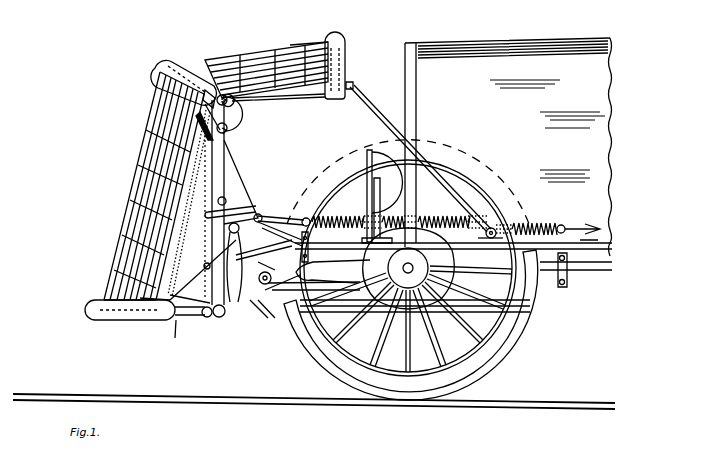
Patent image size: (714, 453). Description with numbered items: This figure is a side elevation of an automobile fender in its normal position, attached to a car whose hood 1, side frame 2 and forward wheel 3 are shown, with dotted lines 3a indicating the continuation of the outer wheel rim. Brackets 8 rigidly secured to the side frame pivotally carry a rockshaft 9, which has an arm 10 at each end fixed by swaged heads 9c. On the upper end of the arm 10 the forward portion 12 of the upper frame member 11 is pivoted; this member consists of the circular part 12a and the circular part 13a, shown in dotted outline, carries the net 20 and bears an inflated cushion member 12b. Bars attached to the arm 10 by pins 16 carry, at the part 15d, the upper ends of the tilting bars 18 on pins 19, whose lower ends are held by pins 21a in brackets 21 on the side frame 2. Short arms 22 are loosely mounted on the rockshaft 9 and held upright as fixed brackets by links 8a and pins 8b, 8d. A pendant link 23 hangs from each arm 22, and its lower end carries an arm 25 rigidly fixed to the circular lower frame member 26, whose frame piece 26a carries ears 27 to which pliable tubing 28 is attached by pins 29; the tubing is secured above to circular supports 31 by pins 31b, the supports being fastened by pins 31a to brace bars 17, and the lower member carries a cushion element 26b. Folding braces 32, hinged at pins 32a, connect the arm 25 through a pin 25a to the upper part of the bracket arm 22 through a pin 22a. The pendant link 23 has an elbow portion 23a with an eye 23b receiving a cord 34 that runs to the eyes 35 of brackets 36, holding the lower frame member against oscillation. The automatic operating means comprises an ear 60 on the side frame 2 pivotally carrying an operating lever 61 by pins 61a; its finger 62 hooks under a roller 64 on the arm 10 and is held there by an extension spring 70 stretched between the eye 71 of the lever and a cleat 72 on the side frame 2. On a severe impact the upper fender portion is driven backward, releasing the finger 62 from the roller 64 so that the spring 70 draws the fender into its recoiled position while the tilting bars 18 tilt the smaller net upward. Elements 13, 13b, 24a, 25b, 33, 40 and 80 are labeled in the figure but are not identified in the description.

The hood 1 is at (508, 147).
The side frame 2 is at (576, 270).
The forward wheel 3 is at (300, 335).
The dotted lines of wheel rim 3a is at (322, 167).
The bracket 8 is at (280, 288).
The link 8a is at (271, 279).
The pin 8b is at (285, 276).
The pin 8d is at (254, 310).
The rockshaft 9 is at (219, 318).
The head 9c is at (226, 316).
The arm 10 is at (226, 150).
The upper frame member 11 is at (266, 62).
The forward portion of upper frame member 12 is at (184, 68).
The circular part 12a is at (160, 72).
The cushion member 12b is at (160, 58).
The cylinder 13 is at (347, 65).
The circular part 13a is at (346, 68).
The cylinder cap 13b is at (335, 32).
The part of bar 15d is at (350, 90).
The pin 16 is at (232, 108).
The brace bar 17 is at (308, 95).
The tilting bar 18 is at (420, 158).
The pin 19 is at (354, 85).
The net 20 is at (296, 48).
The bracket 21 is at (482, 237).
The pin 21a is at (490, 224).
The short arm 22 is at (240, 285).
The pin 22a is at (230, 230).
The pendant link 23 is at (185, 329).
The elbow portion 23a is at (264, 252).
The eye 23b is at (236, 230).
The link rod 24a is at (276, 243).
The arm 25 is at (184, 320).
The pin 25a is at (160, 318).
The rod ring 25b is at (208, 318).
The lower frame member 26 is at (111, 310).
The lower frame piece 26a is at (108, 315).
The cushion element 26b is at (86, 313).
The ear 27 is at (148, 306).
The pliable tubing 28 is at (203, 226).
The pin 29 is at (174, 296).
The circular metal support 31 is at (252, 117).
The pin 31a is at (252, 101).
The pin 31b is at (240, 136).
The folding brace 32 is at (212, 262).
The hinge pin 32a is at (203, 270).
The pawl 33 is at (198, 126).
The cord 34 is at (236, 175).
The eye 35 is at (214, 93).
The bracket 36 is at (205, 113).
The inclined slatted conveyor 40 is at (142, 170).
The ear 60 is at (310, 248).
The automatic operating lever 61 is at (292, 222).
The pin 61a is at (308, 238).
The finger 62 is at (235, 205).
The roller 64 is at (228, 198).
The extension spring 70 is at (442, 222).
The eye 71 is at (260, 215).
The cleat 72 is at (592, 221).
The bracket 80 is at (366, 171).